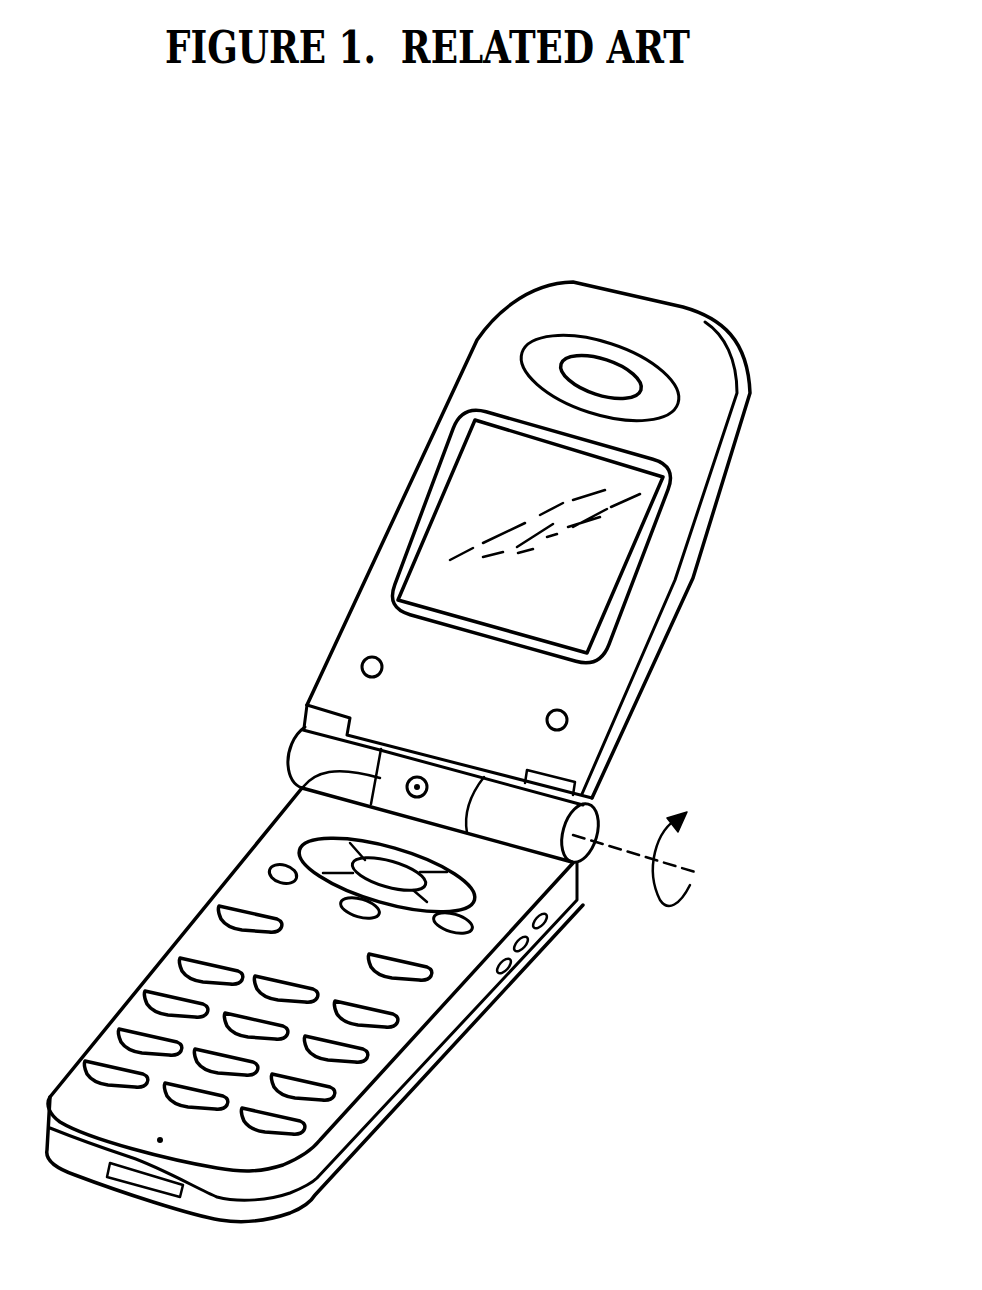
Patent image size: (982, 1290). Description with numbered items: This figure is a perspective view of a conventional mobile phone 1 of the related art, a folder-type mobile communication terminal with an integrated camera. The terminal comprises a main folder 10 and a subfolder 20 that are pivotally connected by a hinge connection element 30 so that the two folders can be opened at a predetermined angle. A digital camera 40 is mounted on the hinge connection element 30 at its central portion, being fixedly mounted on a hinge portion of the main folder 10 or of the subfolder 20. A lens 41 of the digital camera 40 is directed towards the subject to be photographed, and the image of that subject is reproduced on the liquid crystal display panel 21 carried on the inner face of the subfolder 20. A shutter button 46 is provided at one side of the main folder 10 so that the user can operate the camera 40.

The mobile phone 1 is at (393, 366).
The main folder 10 is at (423, 1077).
The subfolder 20 is at (696, 361).
The liquid crystal display (LCD) panel 21 is at (597, 550).
The hinge connection element 30 is at (616, 822).
The digital camera 40 is at (300, 789).
The lens 41 is at (411, 779).
The shutter button 46 is at (560, 930).